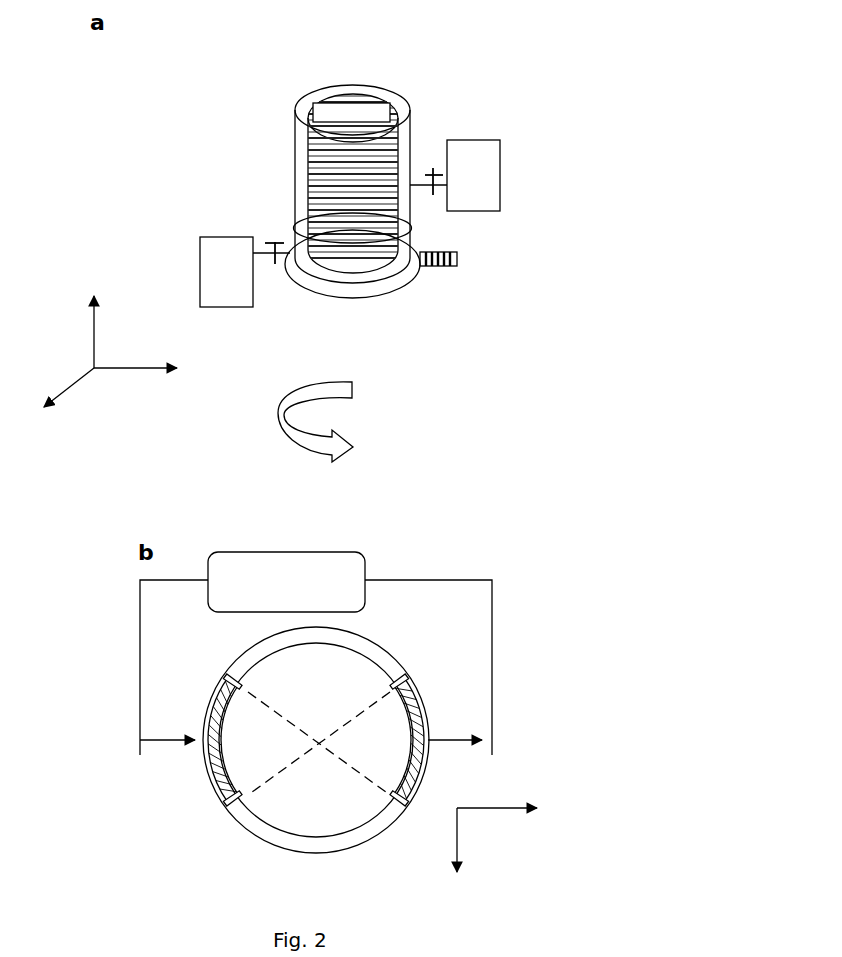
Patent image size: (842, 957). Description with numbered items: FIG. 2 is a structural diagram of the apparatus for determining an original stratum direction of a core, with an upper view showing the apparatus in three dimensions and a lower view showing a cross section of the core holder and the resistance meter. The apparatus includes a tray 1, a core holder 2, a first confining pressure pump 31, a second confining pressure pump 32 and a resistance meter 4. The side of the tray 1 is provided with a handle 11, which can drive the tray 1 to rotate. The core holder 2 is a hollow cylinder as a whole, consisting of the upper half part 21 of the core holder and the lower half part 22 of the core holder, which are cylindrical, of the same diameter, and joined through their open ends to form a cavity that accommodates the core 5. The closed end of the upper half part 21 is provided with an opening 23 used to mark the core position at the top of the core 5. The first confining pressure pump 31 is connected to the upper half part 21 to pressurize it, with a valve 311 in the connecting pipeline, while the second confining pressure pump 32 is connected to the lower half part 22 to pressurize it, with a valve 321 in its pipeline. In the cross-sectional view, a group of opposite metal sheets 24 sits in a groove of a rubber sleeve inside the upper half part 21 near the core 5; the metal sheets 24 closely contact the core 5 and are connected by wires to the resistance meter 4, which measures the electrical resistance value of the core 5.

The tray 1 is at (353, 298).
The core holder 2 is at (293, 228).
The core 5 is at (307, 180).
The handle 11 is at (540, 295).
The upper half part of the core holder 21 is at (295, 117).
The lower half part of the core holder 22 is at (460, 308).
The opening 23 is at (357, 108).
The first confining pressure pump 31 is at (493, 142).
The valve 311 is at (430, 172).
The second confining pressure pump 32 is at (202, 280).
The valve 321 is at (273, 242).
The resistance meter 4 is at (316, 653).
The metal sheet 24 is at (213, 783).